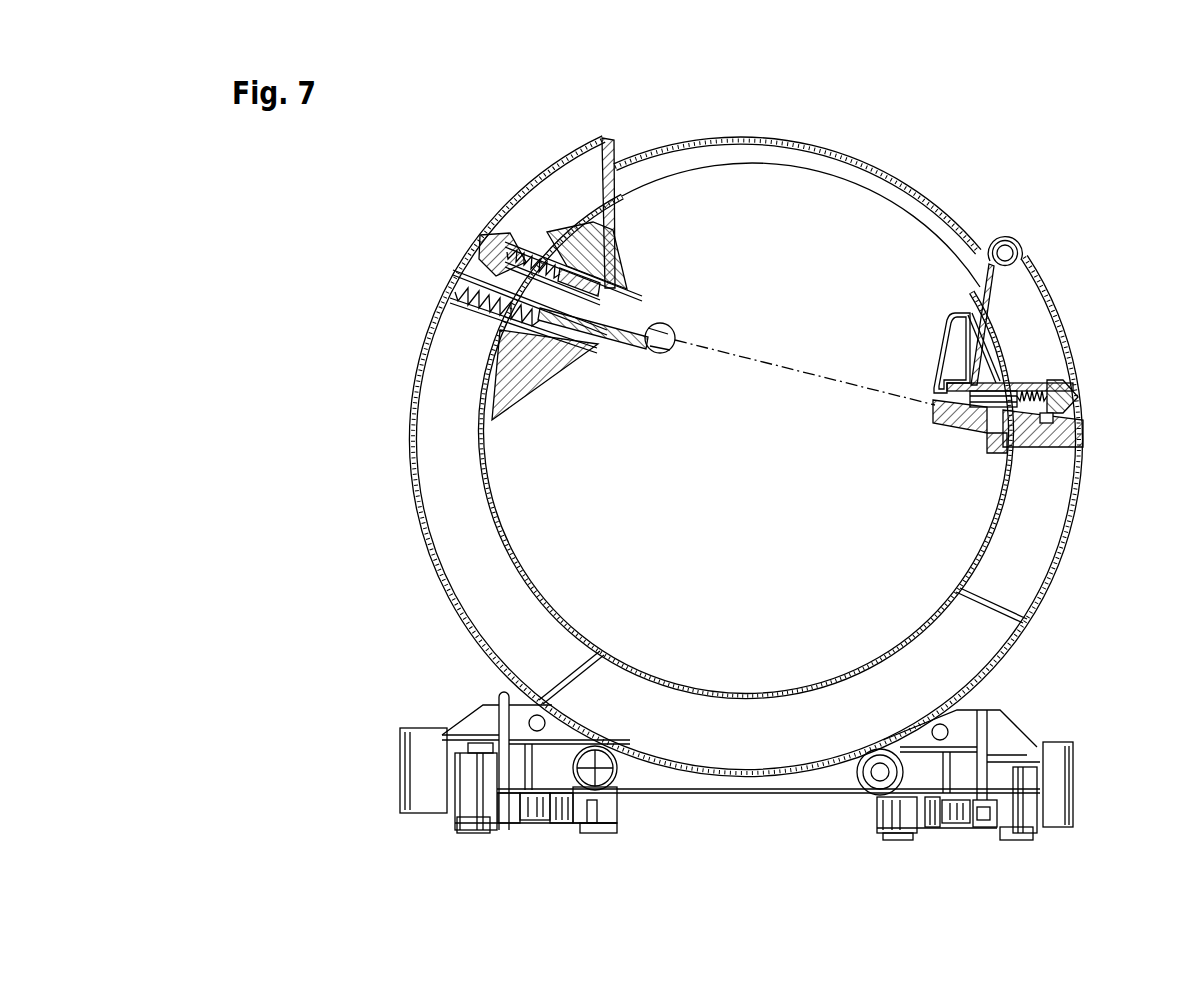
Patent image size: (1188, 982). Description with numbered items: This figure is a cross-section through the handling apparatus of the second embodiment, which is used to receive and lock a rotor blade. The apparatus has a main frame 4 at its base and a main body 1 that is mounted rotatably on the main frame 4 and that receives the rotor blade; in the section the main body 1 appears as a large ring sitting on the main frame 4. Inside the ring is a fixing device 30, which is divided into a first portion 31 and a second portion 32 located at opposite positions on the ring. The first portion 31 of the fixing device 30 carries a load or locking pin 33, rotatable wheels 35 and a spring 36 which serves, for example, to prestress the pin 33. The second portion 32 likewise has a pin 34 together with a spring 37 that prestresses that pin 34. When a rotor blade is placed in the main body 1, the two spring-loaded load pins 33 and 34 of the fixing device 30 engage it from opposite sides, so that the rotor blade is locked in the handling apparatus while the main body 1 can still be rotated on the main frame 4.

The main body 1 is at (1047, 337).
The main frame 4 is at (432, 767).
The fixing device 30 is at (640, 275).
The first portion 31 is at (612, 358).
The second portion 32 is at (928, 443).
The load pin 33 is at (632, 290).
The pin 34 is at (1020, 383).
The rotatable wheels 35 is at (673, 322).
The spring 36 is at (552, 245).
The spring 37 is at (1085, 440).